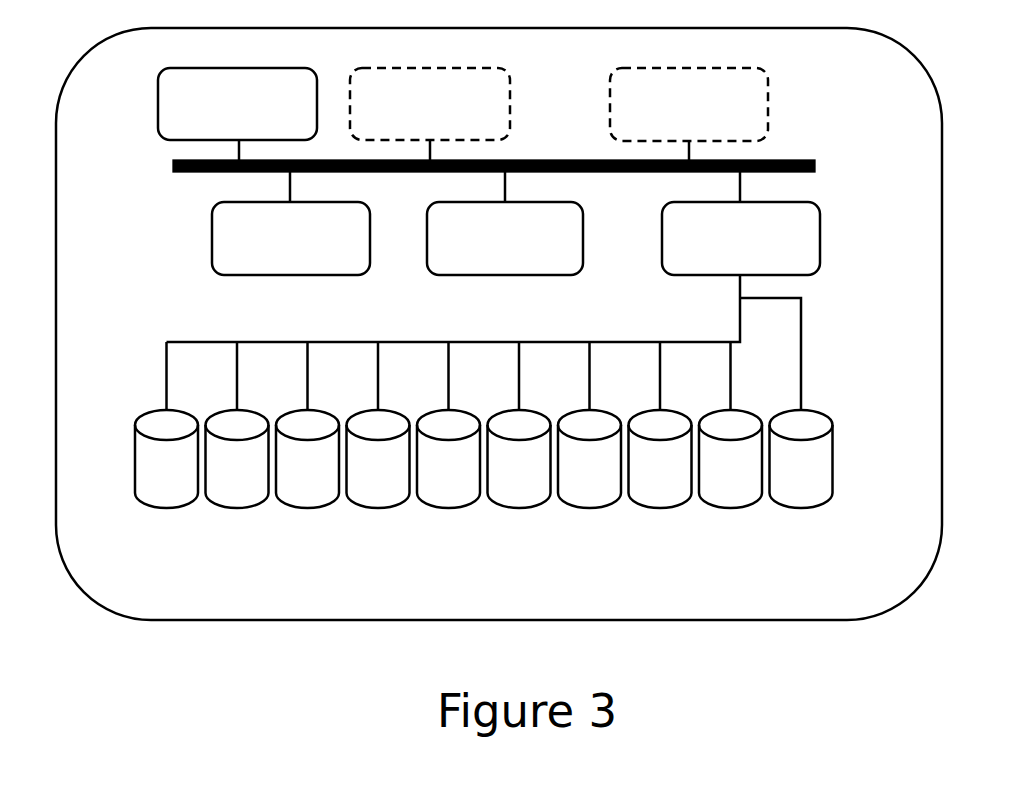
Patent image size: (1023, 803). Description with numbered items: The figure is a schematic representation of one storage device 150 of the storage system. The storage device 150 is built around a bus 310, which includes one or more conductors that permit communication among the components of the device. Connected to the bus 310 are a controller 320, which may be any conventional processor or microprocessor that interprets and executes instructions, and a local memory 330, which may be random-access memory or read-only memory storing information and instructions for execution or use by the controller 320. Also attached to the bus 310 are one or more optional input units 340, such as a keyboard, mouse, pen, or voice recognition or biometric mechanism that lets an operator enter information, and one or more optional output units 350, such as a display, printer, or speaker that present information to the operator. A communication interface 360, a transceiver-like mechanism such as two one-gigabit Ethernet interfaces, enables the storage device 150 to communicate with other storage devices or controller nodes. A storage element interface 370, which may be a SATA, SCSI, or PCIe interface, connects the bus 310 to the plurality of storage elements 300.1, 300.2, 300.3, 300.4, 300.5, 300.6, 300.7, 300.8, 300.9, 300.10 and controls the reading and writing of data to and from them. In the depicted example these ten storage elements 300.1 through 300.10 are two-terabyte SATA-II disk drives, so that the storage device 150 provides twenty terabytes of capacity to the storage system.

The storage device 150 is at (912, 77).
The bus 310 is at (815, 166).
The controller 320 is at (515, 242).
The local memory 330 is at (173, 100).
The input unit 340 is at (498, 104).
The output unit 350 is at (760, 100).
The communication interface 360 is at (312, 242).
The storage element interface 370 is at (808, 243).
The storage element 300.1 is at (158, 493).
The storage element 300.2 is at (232, 493).
The storage element 300.3 is at (304, 493).
The storage element 300.4 is at (380, 493).
The storage element 300.5 is at (445, 493).
The storage element 300.6 is at (518, 493).
The storage element 300.7 is at (592, 493).
The storage element 300.8 is at (667, 493).
The storage element 300.9 is at (729, 493).
The storage element 300.10 is at (803, 493).